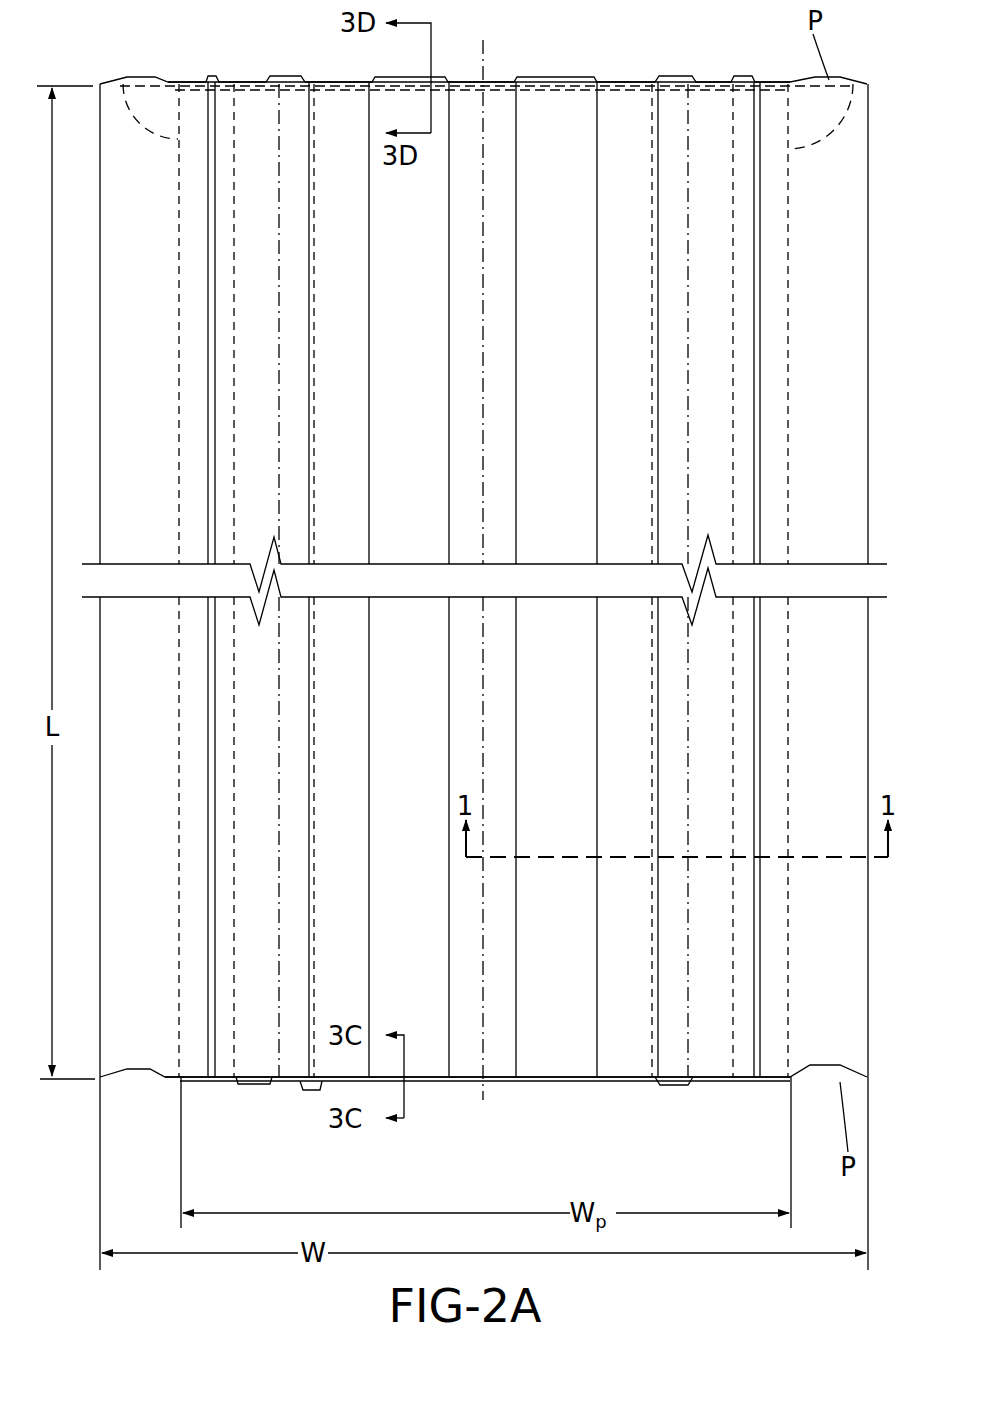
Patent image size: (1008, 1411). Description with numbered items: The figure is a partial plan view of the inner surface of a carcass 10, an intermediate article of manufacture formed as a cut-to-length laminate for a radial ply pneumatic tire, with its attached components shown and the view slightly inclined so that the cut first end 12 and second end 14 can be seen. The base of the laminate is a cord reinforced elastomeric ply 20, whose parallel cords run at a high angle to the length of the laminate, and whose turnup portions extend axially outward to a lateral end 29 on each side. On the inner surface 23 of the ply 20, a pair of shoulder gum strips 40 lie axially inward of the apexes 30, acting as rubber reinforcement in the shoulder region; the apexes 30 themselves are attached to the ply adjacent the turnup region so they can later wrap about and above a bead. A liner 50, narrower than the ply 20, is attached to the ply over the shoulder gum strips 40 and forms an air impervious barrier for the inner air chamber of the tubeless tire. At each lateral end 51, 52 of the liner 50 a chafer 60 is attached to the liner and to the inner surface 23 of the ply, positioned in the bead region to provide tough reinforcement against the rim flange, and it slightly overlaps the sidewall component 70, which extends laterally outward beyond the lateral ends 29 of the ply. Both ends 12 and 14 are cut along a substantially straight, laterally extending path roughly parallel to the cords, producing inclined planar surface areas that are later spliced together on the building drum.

The carcass 10 is at (273, 48).
The first end 12 is at (762, 1084).
The second end 14 is at (777, 76).
The ply 20 is at (513, 1081).
The inner surface 23 is at (323, 1082).
The lateral end 29 is at (127, 80).
The apex 30 is at (291, 1087).
The shoulder gum strip 40 is at (438, 1081).
The liner 50 is at (466, 1052).
The lateral end of the liner 51 is at (699, 1082).
The lateral end of the liner 52 is at (277, 1082).
The chafer 60 is at (258, 1047).
The sidewall component 70 is at (140, 1082).